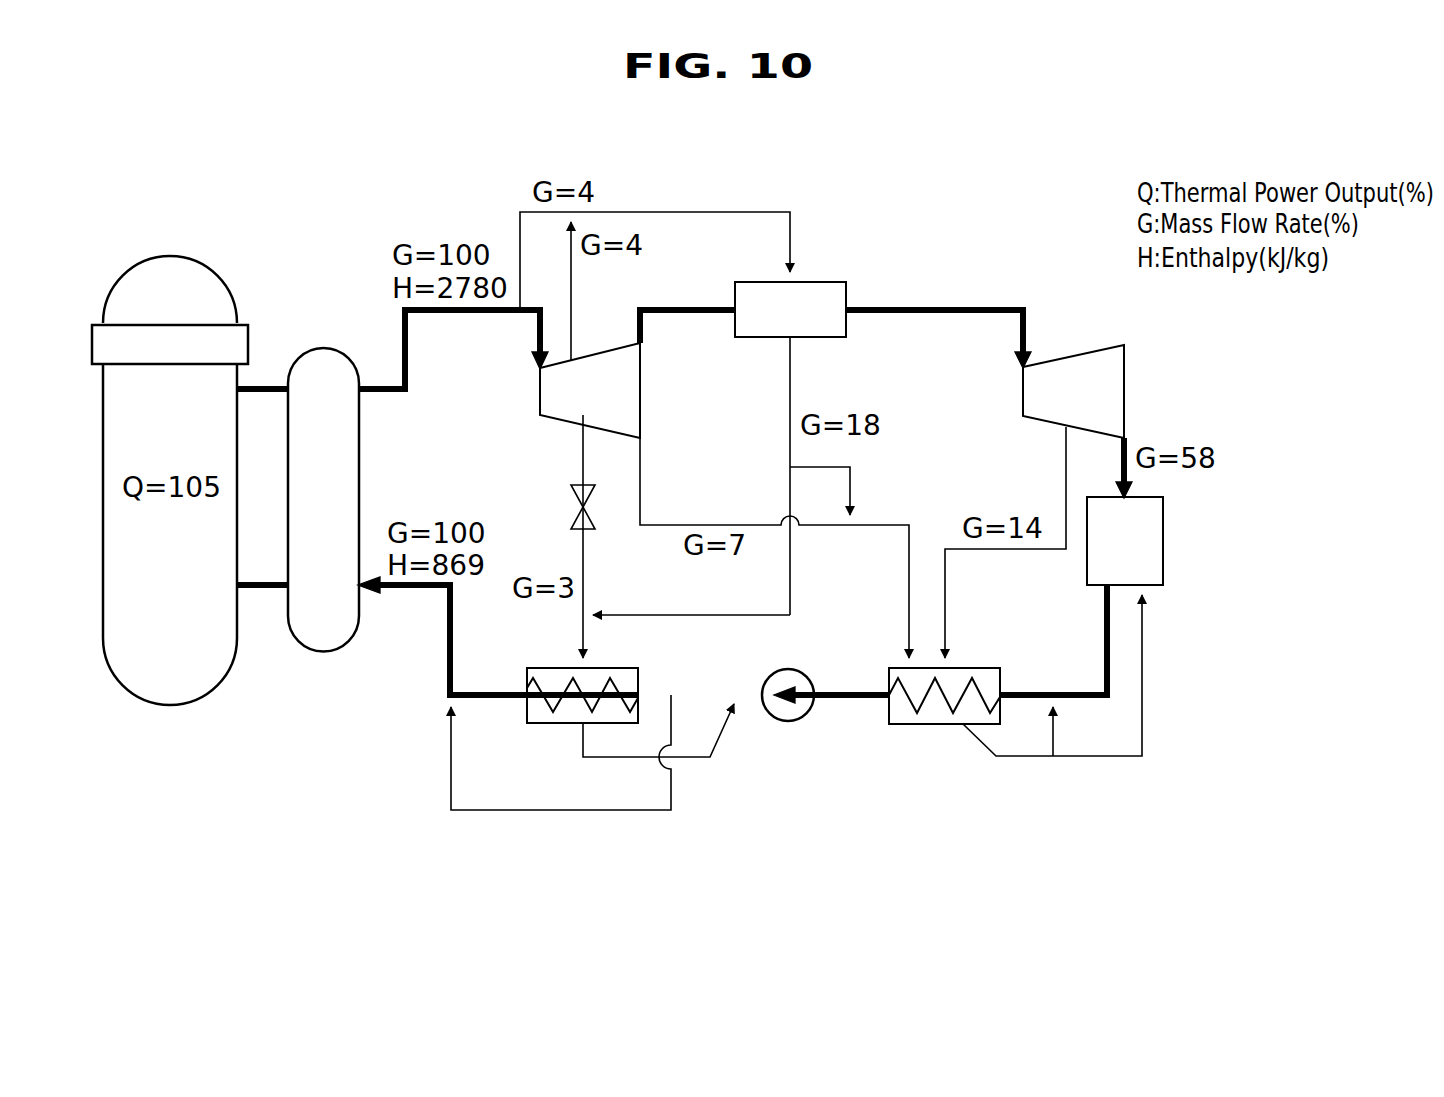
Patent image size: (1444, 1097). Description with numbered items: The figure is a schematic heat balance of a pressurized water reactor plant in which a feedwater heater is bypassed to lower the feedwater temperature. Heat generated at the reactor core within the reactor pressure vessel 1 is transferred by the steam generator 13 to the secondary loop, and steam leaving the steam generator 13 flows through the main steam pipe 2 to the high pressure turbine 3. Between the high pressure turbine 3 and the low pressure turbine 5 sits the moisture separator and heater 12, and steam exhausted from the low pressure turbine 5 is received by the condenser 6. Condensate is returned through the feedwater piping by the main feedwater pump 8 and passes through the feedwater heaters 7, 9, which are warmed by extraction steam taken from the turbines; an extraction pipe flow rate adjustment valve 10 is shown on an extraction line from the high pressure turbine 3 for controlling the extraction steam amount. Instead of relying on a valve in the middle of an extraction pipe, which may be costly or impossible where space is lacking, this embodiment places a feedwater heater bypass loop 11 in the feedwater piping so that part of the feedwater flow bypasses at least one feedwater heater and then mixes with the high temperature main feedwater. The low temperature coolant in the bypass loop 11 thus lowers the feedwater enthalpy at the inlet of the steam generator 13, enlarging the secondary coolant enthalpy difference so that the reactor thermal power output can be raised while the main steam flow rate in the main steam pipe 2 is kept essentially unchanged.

The reactor pressure vessel 1 is at (168, 256).
The main steam pipe 2 is at (408, 361).
The high pressure turbine 3 is at (640, 395).
The low pressure turbine 5 is at (1120, 393).
The condenser 6 is at (1163, 540).
The feedwater heater 7 is at (980, 668).
The main feedwater pump 8 is at (788, 669).
The feedwater heater 9 is at (617, 668).
The extraction pipe flow rate adjustment valve 10 is at (592, 500).
The feedwater heater bypass loop 11 is at (450, 756).
The moisture separator and heater 12 is at (817, 287).
The steam generator 13 is at (325, 348).